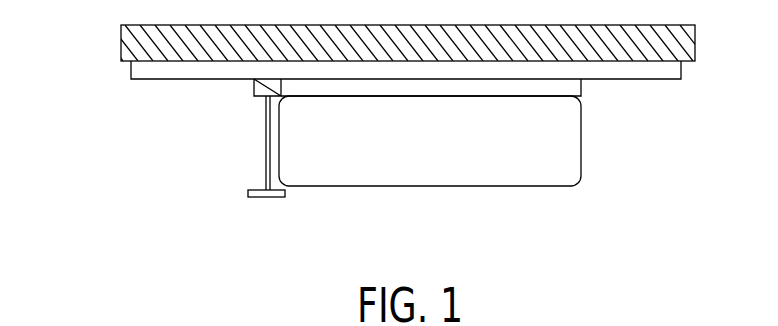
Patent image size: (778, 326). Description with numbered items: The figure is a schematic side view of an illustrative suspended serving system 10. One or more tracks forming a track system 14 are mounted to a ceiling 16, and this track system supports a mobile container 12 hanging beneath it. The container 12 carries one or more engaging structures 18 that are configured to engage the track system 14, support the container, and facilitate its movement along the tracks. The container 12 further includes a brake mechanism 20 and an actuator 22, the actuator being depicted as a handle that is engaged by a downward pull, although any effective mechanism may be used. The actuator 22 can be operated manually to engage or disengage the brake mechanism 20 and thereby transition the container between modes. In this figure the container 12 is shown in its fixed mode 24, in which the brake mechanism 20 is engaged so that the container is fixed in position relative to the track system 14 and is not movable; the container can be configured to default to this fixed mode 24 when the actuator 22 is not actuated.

The suspended serving system 10 is at (104, 107).
The mobile container 12 is at (575, 168).
The track system 14 is at (674, 72).
The ceiling 16 is at (688, 36).
The engaging structure 18 is at (578, 97).
The brake mechanism 20 is at (256, 82).
The actuator 22 is at (270, 198).
The fixed mode 24 is at (238, 121).